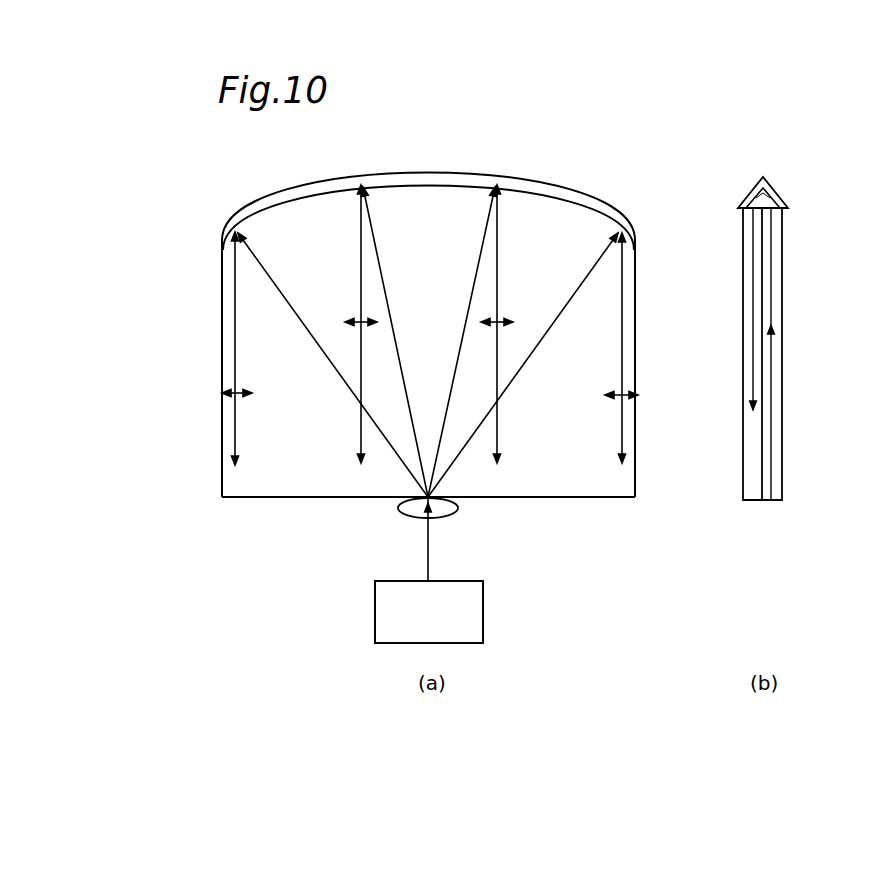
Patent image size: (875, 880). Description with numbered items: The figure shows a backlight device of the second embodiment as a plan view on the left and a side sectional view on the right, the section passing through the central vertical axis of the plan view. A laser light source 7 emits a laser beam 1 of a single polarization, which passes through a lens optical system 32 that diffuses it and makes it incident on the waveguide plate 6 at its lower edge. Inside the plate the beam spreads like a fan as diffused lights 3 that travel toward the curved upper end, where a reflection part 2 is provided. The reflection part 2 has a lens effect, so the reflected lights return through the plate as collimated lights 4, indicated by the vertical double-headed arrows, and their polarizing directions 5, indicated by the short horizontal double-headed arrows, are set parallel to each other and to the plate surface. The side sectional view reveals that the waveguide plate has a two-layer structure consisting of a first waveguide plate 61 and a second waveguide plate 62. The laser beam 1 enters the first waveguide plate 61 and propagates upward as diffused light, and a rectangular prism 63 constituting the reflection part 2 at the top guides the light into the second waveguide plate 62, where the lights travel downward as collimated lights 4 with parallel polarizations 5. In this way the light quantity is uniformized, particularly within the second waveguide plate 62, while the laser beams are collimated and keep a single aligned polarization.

The laser beam 1 is at (428, 562).
The reflection part 2 is at (525, 180).
The diffused lights 3 is at (250, 248).
The collimated lights 4 is at (235, 291).
The polarizing directions 5 is at (222, 388).
The waveguide plate 6 is at (598, 498).
The laser light source 7 is at (483, 605).
The lens optical system 32 is at (457, 503).
The first waveguide plate 61 is at (781, 421).
The second waveguide plate 62 is at (752, 454).
The rectangular prism 63 is at (556, 192).